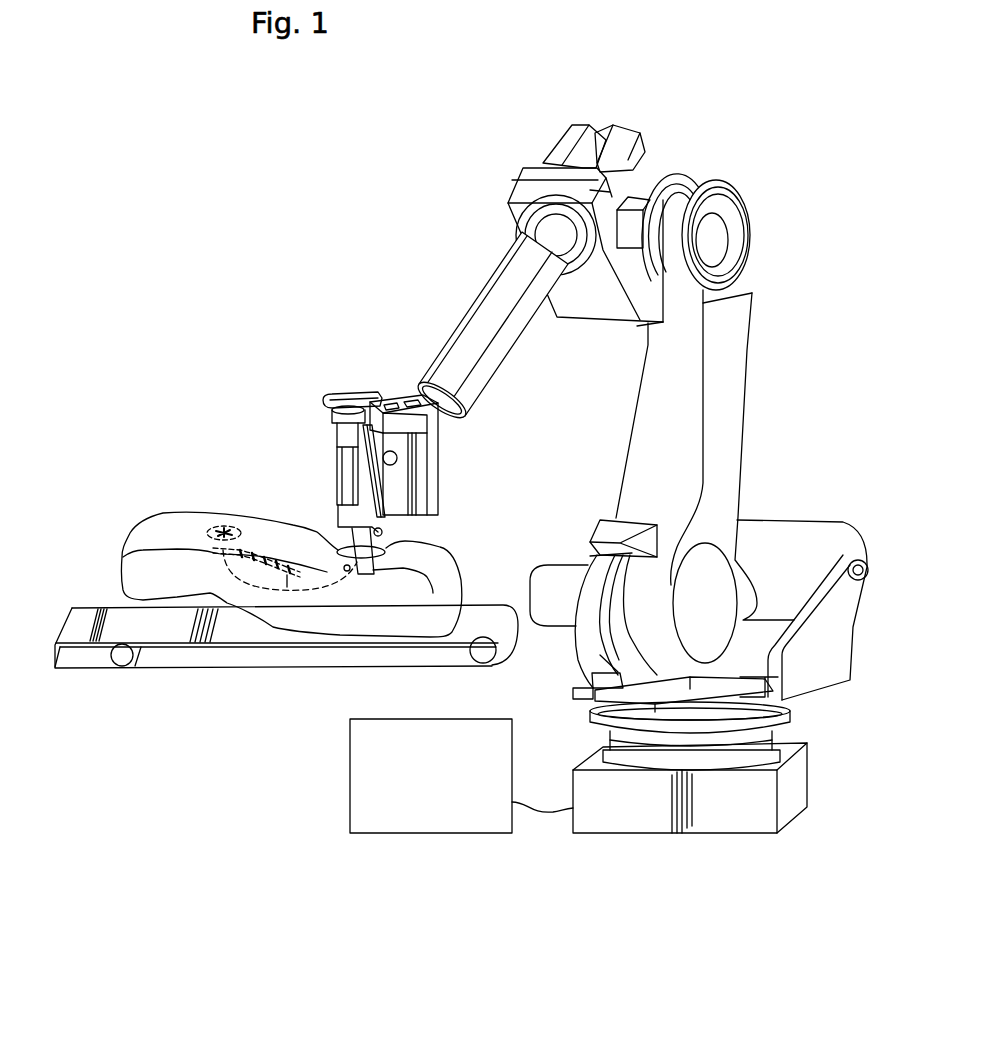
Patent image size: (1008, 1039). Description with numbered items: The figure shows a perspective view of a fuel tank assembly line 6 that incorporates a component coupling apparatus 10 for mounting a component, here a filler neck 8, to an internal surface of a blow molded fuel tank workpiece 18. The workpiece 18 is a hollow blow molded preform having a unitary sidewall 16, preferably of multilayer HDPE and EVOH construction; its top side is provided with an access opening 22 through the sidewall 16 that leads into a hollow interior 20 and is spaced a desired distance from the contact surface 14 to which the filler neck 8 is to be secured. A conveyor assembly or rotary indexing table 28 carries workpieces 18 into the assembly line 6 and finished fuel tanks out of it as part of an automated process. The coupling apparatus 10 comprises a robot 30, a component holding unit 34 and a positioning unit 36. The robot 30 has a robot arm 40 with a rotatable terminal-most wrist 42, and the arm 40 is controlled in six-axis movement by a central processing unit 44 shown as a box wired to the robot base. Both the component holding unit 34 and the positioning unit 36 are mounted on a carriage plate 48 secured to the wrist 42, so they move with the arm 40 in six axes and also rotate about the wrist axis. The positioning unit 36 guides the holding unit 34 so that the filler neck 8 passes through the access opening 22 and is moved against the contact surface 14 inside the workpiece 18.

The fuel tank assembly line 6 is at (327, 222).
The filler neck 8 is at (256, 530).
The component coupling apparatus 10 is at (322, 436).
The contact surface 14 is at (221, 523).
The sidewall 16 is at (167, 518).
The workpiece 18 is at (305, 635).
The hollow interior 20 is at (400, 618).
The access opening 22 is at (405, 541).
The conveyor assembly 28 is at (162, 654).
The robot 30 is at (732, 390).
The component holding unit 34 is at (342, 388).
The positioning unit 36 is at (402, 388).
The robot arm 40 is at (505, 332).
The wrist 42 is at (445, 417).
The central processing unit 44 is at (445, 810).
The carriage plate 48 is at (420, 480).